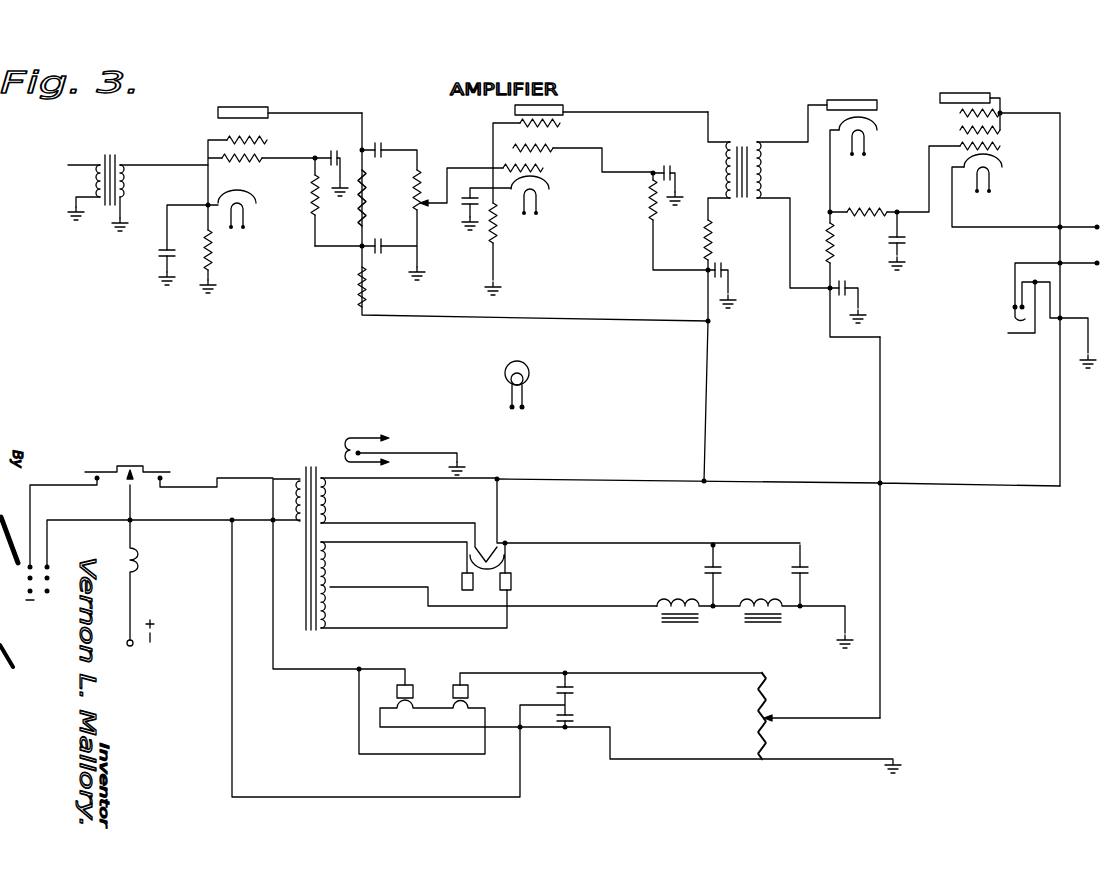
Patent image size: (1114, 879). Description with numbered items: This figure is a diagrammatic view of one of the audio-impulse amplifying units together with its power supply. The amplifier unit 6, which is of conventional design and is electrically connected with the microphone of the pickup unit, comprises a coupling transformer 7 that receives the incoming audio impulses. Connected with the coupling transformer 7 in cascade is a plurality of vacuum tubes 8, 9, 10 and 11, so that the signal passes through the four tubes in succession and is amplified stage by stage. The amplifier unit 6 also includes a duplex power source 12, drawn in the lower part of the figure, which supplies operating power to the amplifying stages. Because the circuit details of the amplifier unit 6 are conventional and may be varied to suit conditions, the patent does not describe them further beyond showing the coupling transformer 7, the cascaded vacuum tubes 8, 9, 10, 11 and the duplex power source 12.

The audio-impulse amplifier unit 6 is at (668, 111).
The coupling transformer 7 is at (118, 158).
The vacuum tube 8 is at (268, 146).
The vacuum tube 9 is at (545, 143).
The vacuum tube 10 is at (858, 101).
The vacuum tube 11 is at (1002, 106).
The duplex power source 12 is at (543, 508).